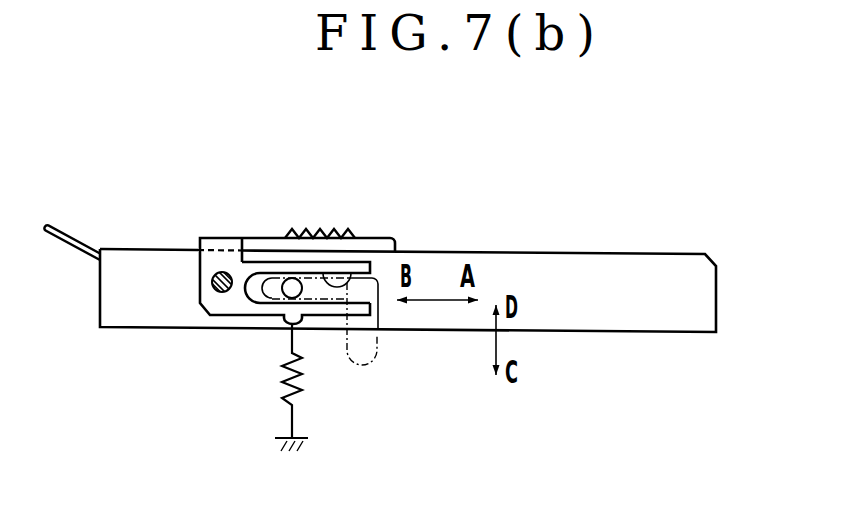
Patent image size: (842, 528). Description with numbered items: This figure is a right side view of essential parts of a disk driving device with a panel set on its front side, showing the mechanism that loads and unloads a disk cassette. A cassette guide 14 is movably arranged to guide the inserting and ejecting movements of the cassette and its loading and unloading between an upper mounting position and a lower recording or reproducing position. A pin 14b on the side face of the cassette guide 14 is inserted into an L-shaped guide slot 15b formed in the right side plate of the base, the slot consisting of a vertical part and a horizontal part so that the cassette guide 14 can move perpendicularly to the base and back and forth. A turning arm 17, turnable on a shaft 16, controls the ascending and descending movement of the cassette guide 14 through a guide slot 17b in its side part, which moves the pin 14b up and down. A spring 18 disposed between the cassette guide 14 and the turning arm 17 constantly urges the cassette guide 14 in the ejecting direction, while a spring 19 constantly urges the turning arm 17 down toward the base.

The cassette guide 14 is at (128, 295).
The pin 14b is at (301, 284).
The L-shaped guide slot 15b is at (378, 330).
The shaft 16 is at (223, 271).
The turning arm 17 is at (223, 305).
The guide slot 17b is at (353, 262).
The spring 18 is at (295, 230).
The spring 19 is at (283, 382).